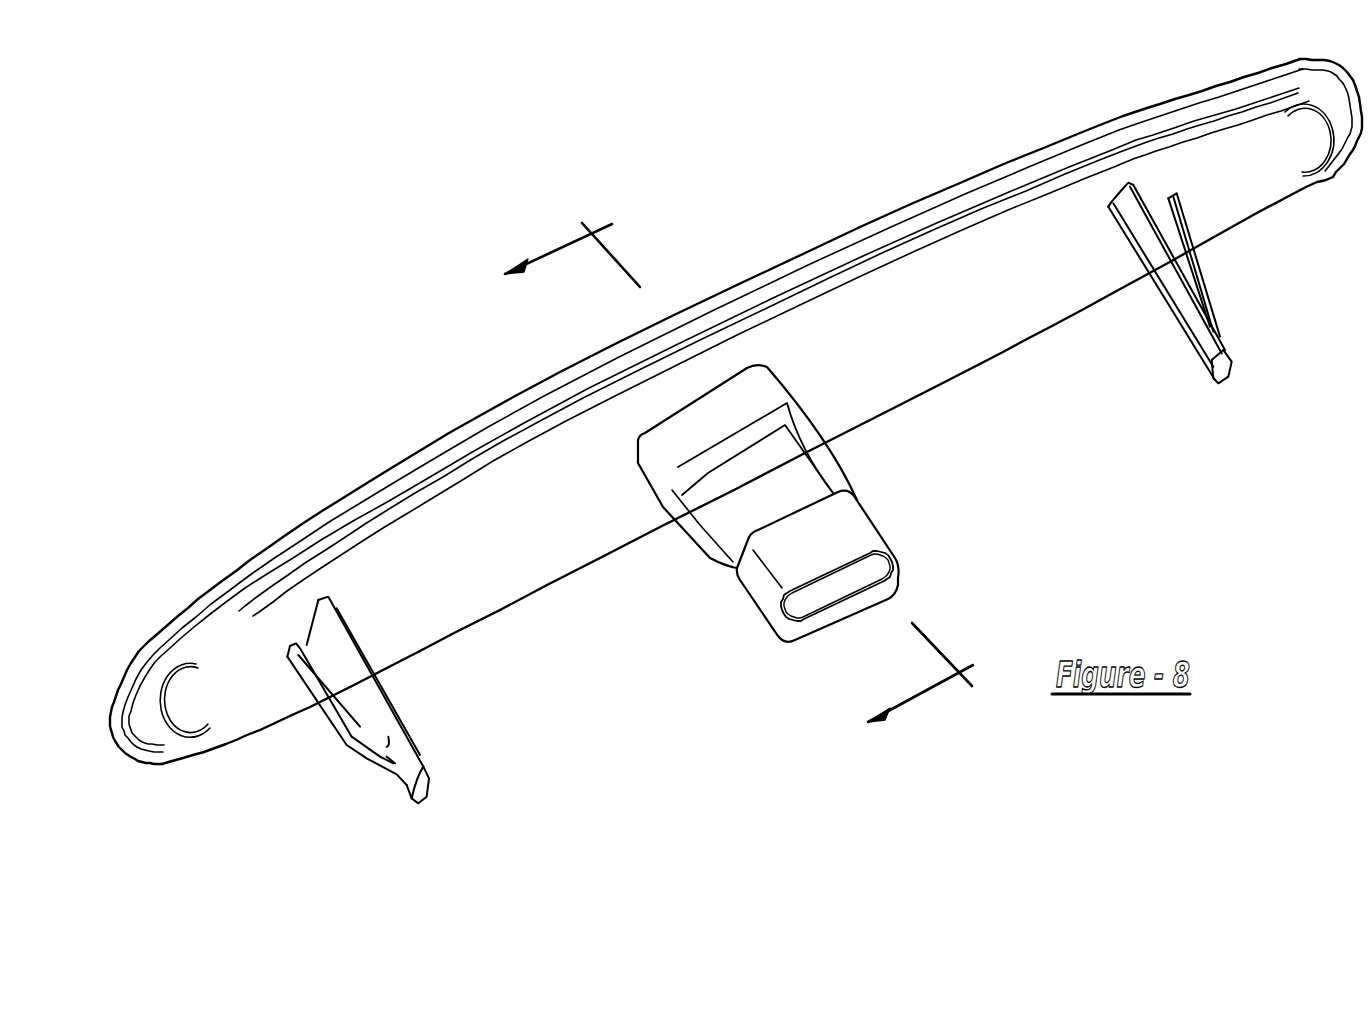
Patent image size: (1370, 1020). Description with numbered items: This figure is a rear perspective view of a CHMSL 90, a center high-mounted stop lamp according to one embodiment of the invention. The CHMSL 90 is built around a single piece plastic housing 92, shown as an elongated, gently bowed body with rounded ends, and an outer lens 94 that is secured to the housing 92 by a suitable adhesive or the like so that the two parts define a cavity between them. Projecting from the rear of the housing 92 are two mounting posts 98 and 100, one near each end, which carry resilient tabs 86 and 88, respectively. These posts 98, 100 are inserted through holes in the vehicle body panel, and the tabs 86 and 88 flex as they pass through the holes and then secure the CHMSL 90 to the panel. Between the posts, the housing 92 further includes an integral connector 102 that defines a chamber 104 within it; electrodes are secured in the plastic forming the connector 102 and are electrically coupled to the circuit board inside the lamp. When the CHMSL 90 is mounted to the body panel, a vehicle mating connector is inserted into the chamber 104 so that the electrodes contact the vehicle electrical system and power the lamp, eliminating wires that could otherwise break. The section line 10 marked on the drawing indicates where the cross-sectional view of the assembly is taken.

The section line 10 is at (721, 500).
The resilient tab 86 is at (323, 700).
The resilient tab 88 is at (1187, 223).
The CHMSL 90 is at (917, 179).
The housing 92 is at (497, 568).
The outer lens 94 is at (393, 467).
The mounting post 98 is at (417, 762).
The mounting post 100 is at (1227, 353).
The connector 102 is at (852, 533).
The chamber 104 is at (792, 623).